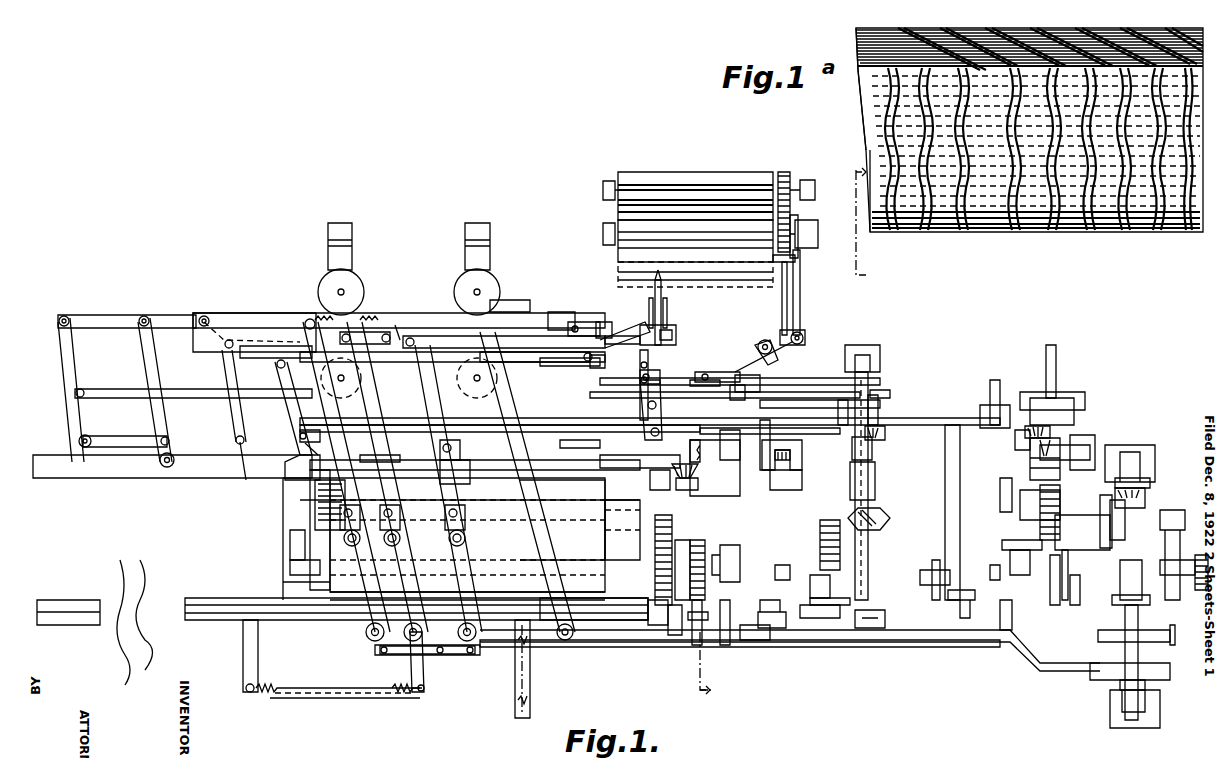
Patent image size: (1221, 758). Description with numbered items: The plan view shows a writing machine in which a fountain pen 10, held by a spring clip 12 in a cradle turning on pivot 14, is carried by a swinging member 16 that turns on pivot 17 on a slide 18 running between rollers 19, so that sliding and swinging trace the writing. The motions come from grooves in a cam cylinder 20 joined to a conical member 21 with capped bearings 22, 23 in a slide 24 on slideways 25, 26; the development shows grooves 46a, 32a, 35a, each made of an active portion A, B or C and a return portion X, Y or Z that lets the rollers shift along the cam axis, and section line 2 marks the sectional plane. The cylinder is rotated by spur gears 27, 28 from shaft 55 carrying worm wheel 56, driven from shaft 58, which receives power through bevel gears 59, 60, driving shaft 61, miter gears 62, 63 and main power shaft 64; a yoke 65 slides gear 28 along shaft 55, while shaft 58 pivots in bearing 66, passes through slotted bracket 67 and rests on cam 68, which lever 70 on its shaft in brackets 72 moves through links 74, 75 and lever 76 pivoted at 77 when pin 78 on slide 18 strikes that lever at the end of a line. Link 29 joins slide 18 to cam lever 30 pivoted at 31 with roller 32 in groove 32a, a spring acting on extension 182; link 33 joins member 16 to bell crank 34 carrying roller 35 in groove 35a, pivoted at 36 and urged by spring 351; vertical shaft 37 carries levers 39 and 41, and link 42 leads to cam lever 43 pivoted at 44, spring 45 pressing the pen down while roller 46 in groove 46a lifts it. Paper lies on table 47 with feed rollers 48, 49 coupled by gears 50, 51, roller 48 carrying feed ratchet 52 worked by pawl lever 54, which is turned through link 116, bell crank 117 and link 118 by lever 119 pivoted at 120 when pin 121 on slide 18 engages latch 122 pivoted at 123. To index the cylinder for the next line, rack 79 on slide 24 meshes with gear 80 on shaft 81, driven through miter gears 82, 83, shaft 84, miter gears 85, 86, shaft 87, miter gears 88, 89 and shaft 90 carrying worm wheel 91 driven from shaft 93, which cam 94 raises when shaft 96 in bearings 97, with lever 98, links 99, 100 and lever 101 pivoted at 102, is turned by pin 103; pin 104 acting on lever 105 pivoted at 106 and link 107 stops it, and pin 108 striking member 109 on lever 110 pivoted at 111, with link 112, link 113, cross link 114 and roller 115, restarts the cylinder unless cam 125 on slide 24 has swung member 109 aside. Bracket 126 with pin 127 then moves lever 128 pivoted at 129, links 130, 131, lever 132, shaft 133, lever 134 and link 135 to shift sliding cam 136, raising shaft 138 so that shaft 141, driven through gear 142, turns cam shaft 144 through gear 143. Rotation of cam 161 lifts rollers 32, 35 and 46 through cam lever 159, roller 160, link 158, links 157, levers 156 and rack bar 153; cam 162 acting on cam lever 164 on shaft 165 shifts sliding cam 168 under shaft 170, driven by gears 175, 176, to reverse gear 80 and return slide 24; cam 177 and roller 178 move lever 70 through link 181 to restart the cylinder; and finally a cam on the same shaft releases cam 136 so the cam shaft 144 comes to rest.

In FIG. 1A, the pile of sheets 20 is at (856, 36).
In FIG. 1, the pile of sheets 20 is at (292, 568).
In FIG. 1A, the sheet portion X is at (935, 28).
In FIG. 1A, the sheet portion Y is at (972, 30).
In FIG. 1A, the sheet portion Z is at (1003, 28).
In FIG. 1A, the sheet edge A is at (862, 90).
In FIG. 1A, the sheet edge B is at (905, 123).
In FIG. 1A, the fold line C is at (996, 98).
In FIG. 1A, the section line 2 is at (862, 209).
In FIG. 1, the section line 2 is at (706, 672).
In FIG. 1A, the fold 46a is at (1122, 250).
In FIG. 1A, the fold 32a is at (1162, 260).
In FIG. 1A, the fold 35a is at (1186, 250).
In FIG. 1, the knife 10 is at (662, 298).
In FIG. 1, the knife guide 12 is at (668, 312).
In FIG. 1, the knife block 14 is at (678, 334).
In FIG. 1, the bar 16 is at (500, 352).
In FIG. 1, the rod 17 is at (418, 330).
In FIG. 1, the bar 18 is at (280, 316).
In FIG. 1, the rollers 19 is at (460, 378).
In FIG. 1, the frame 21 is at (290, 506).
In FIG. 1, the bracket 22 is at (290, 540).
In FIG. 1, the housing 23 is at (638, 512).
In FIG. 1, the plate 24 is at (300, 586).
In FIG. 1, the base rail 25 is at (185, 470).
In FIG. 1, the base rail 26 is at (232, 595).
In FIG. 1, the bearing 27 is at (670, 495).
In FIG. 1, the bracket 28 is at (655, 622).
In FIG. 1, the spring 29 is at (398, 320).
In FIG. 1, the arm 30 is at (420, 575).
In FIG. 1, the pivot 31 is at (458, 630).
In FIG. 1, the pivot bracket 32 is at (400, 522).
In FIG. 1, the arm 33 is at (572, 522).
In FIG. 1, the pivot 34 is at (590, 626).
In FIG. 1, the pivot bracket 35 is at (466, 524).
In FIG. 1, the rail 36 is at (500, 598).
In FIG. 1, the bracket 37 is at (572, 320).
In FIG. 1, the bracket 39 is at (604, 322).
In FIG. 1, the bracket 41 is at (608, 352).
In FIG. 1, the bar 42 is at (548, 362).
In FIG. 1, the arm 43 is at (340, 612).
In FIG. 1, the link 44 is at (370, 650).
In FIG. 1, the link 45 is at (380, 330).
In FIG. 1, the gear 46 is at (330, 542).
In FIG. 1, the rod 47 is at (790, 314).
In FIG. 1, the roller 48 is at (730, 250).
In FIG. 1, the roller 49 is at (740, 165).
In FIG. 1, the gear 50 is at (786, 176).
In FIG. 1, the bracket 51 is at (770, 260).
In FIG. 1, the rod 52 is at (800, 258).
In FIG. 1, the knob 54 is at (808, 222).
In FIG. 1, the gear 55 is at (716, 552).
In FIG. 1, the gear 56 is at (712, 540).
In FIG. 1, the shaft 58 is at (695, 640).
In FIG. 1, the housing 59 is at (742, 480).
In FIG. 1, the rod 60 is at (735, 428).
In FIG. 1, the gear 61 is at (704, 440).
In FIG. 1, the gear 62 is at (1020, 428).
In FIG. 1, the gear 63 is at (1060, 430).
In FIG. 1, the shaft 64 is at (1056, 362).
In FIG. 1, the gear 65 is at (660, 505).
In FIG. 1, the gear 66 is at (712, 484).
In FIG. 1, the bearing 67 is at (710, 612).
In FIG. 1, the shaft 68 is at (722, 645).
In FIG. 1, the bracket 70 is at (758, 640).
In FIG. 1, the bracket 72 is at (760, 660).
In FIG. 1, the link 74 is at (730, 345).
In FIG. 1, the rod 75 is at (742, 392).
In FIG. 1, the bar 76 is at (585, 366).
In FIG. 1, the bar 77 is at (598, 436).
In FIG. 1, the block 78 is at (512, 290).
In FIG. 1, the bar 79 is at (578, 486).
In FIG. 1, the shaft 80 is at (405, 500).
In FIG. 1, the bar 81 is at (378, 464).
In FIG. 1, the arm 82 is at (345, 375).
In FIG. 1, the arm 83 is at (408, 392).
In FIG. 1, the rod 84 is at (815, 400).
In FIG. 1, the bracket 85 is at (872, 412).
In FIG. 1, the gear 86 is at (888, 432).
In FIG. 1, the collar 87 is at (872, 462).
In FIG. 1, the gear 88 is at (890, 510).
In FIG. 1, the gear 89 is at (840, 565).
In FIG. 1, the bearing 90 is at (795, 560).
In FIG. 1, the housing 91 is at (792, 480).
In FIG. 1, the bearing 93 is at (810, 585).
In FIG. 1, the plate 94 is at (840, 604).
In FIG. 1, the shaft 96 is at (855, 470).
In FIG. 1, the bracket 97 is at (895, 628).
In FIG. 1, the block 98 is at (785, 390).
In FIG. 1, the pivot 99 is at (810, 340).
In FIG. 1, the block 100 is at (662, 372).
In FIG. 1, the rod 101 is at (705, 398).
In FIG. 1, the bar 102 is at (640, 470).
In FIG. 1, the block 103 is at (552, 312).
In FIG. 1, the plate 104 is at (245, 303).
In FIG. 1, the link 105 is at (222, 355).
In FIG. 1, the link 106 is at (240, 475).
In FIG. 1, the bar 107 is at (262, 378).
In FIG. 1, the pin 108 is at (208, 315).
In FIG. 1, the bar 109 is at (180, 306).
In FIG. 1, the link 110 is at (78, 378).
In FIG. 1, the pivot 111 is at (80, 441).
In FIG. 1, the bar 112 is at (185, 390).
In FIG. 1, the bar 113 is at (145, 440).
In FIG. 1, the link 114 is at (168, 426).
In FIG. 1, the pivot 115 is at (175, 455).
In FIG. 1, the rod 116 is at (802, 290).
In FIG. 1, the lever 117 is at (776, 368).
In FIG. 1, the bar 118 is at (722, 378).
In FIG. 1, the link 119 is at (645, 432).
In FIG. 1, the rod 120 is at (592, 420).
In FIG. 1, the bar 121 is at (570, 340).
In FIG. 1, the link 122 is at (625, 326).
In FIG. 1, the link 123 is at (640, 385).
In FIG. 1, the block 125 is at (298, 474).
In FIG. 1, the bracket 126 is at (440, 470).
In FIG. 1, the pivot 127 is at (448, 446).
In FIG. 1, the link 128 is at (300, 447).
In FIG. 1, the link 129 is at (290, 348).
In FIG. 1, the block 130 is at (298, 434).
In FIG. 1, the rod 131 is at (540, 422).
In FIG. 1, the bracket 132 is at (995, 400).
In FIG. 1, the shaft 133 is at (960, 505).
In FIG. 1, the plate 134 is at (1022, 540).
In FIG. 1, the bracket 135 is at (920, 578).
In FIG. 1, the rod 136 is at (1068, 590).
In FIG. 1, the block 138 is at (1040, 574).
In FIG. 1, the rod 141 is at (1060, 605).
In FIG. 1, the clutch 142 is at (1125, 508).
In FIG. 1, the gear 143 is at (1146, 492).
In FIG. 1, the housing 144 is at (1130, 452).
In FIG. 1, the pivot 153 is at (369, 632).
In FIG. 1, the spring 156 is at (405, 690).
In FIG. 1, the link 157 is at (460, 656).
In FIG. 1, the base plate 158 is at (572, 650).
In FIG. 1, the plate 159 is at (1090, 672).
In FIG. 1, the collar 160 is at (1088, 683).
In FIG. 1, the bearing 161 is at (1115, 692).
In FIG. 1, the shaft 162 is at (1120, 602).
In FIG. 1, the gear 164 is at (1185, 600).
In FIG. 1, the shaft 165 is at (1165, 545).
In FIG. 1, the block 168 is at (1006, 590).
In FIG. 1, the gear 170 is at (952, 596).
In FIG. 1, the collar 175 is at (890, 490).
In FIG. 1, the bracket 176 is at (942, 405).
In FIG. 1, the plate 177 is at (1112, 640).
In FIG. 1, the block 178 is at (1172, 645).
In FIG. 1, the spring 181 is at (288, 690).
In FIG. 1, the rod 182 is at (424, 690).
In FIG. 1, the rod 351 is at (532, 700).